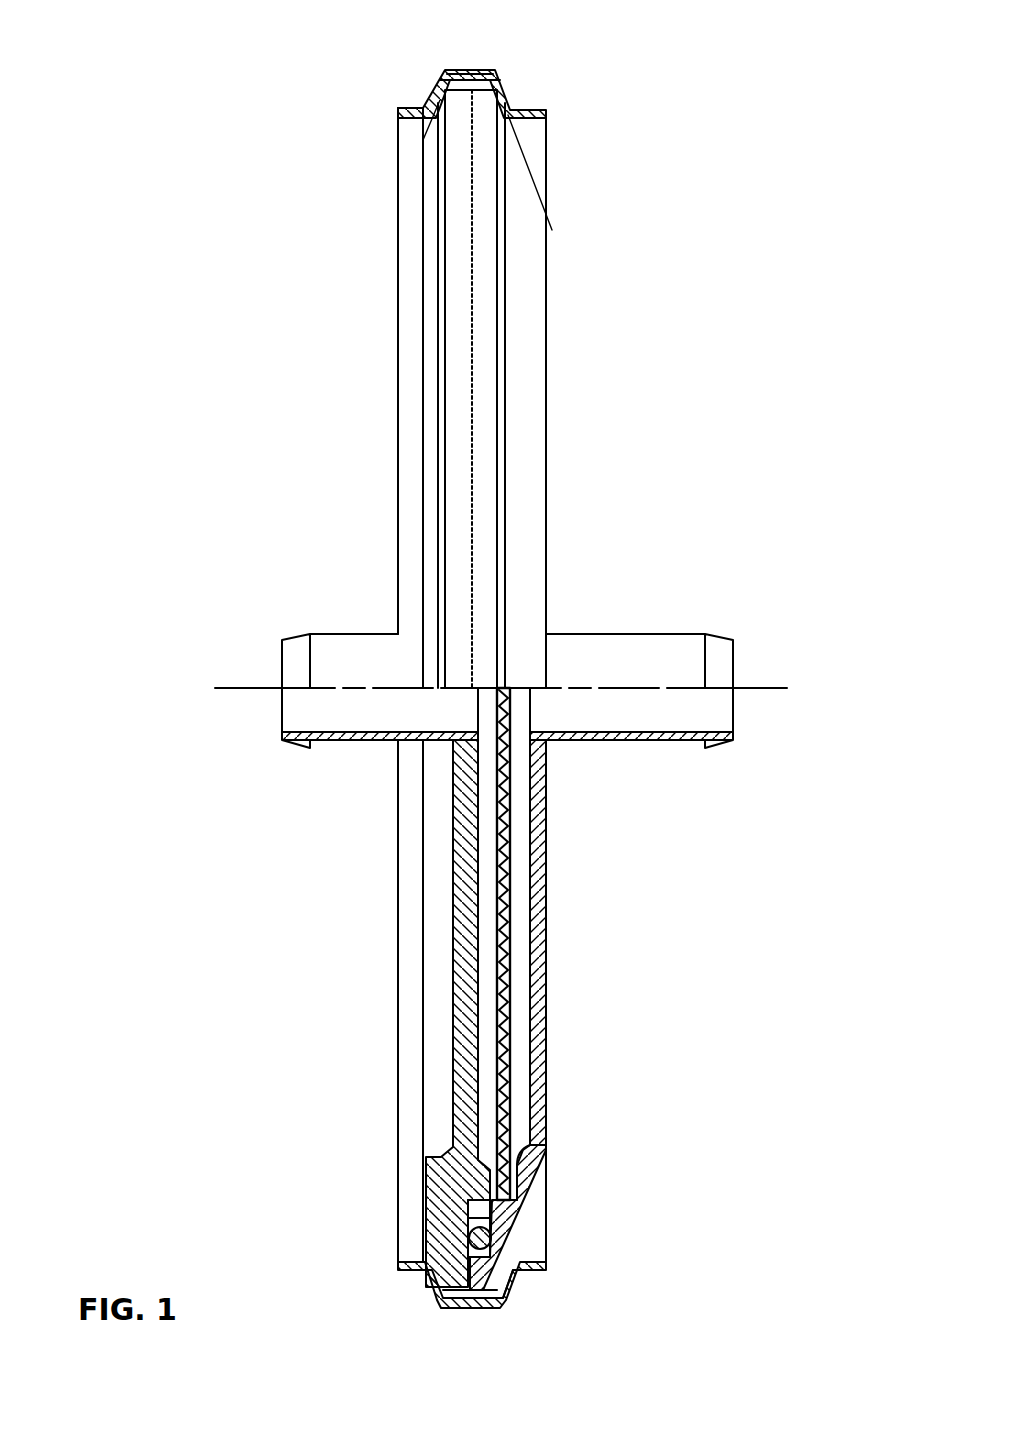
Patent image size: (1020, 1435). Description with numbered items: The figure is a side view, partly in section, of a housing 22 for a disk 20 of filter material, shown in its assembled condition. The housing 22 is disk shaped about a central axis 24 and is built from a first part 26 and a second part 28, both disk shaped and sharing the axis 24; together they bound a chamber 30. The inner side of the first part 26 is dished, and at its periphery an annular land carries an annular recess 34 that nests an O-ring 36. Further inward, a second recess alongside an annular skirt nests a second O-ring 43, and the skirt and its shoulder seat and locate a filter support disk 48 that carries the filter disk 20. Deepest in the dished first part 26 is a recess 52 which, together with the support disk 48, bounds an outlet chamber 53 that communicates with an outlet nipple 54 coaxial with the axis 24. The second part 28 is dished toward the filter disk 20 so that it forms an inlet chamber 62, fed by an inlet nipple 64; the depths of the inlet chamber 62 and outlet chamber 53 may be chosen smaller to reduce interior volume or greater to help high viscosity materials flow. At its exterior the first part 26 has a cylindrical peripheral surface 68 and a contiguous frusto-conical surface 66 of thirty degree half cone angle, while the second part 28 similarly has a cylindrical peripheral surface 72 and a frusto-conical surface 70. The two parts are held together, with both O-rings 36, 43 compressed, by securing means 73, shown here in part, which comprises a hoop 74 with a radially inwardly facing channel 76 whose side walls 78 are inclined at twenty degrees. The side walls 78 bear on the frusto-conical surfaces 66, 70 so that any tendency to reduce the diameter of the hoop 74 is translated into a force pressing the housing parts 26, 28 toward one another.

The disk of filter material 20 is at (476, 1024).
The housing 22 is at (480, 345).
The axis 24 is at (770, 690).
The first part 26 is at (528, 435).
The second part 28 is at (452, 410).
The chamber 30 is at (515, 915).
The annular recess 34 is at (483, 1235).
The O-ring 36 is at (512, 1272).
The O-ring 43 is at (535, 1168).
The filter support disk 48 is at (505, 1002).
The recess 52 is at (522, 845).
The outlet chamber 53 is at (518, 782).
The outlet nipple 54 is at (646, 634).
The inlet chamber 62 is at (483, 880).
The inlet nipple 64 is at (340, 634).
The frusto-conical surface 66 is at (490, 1248).
The cylindrical peripheral surface 68 is at (488, 1310).
The frusto-conical surface 70 is at (424, 1244).
The cylindrical peripheral surface 72 is at (447, 1310).
The securing means 73 is at (366, 132).
The hoop 74 is at (538, 108).
The channel 76 is at (461, 72).
The side walls 78 is at (447, 70).